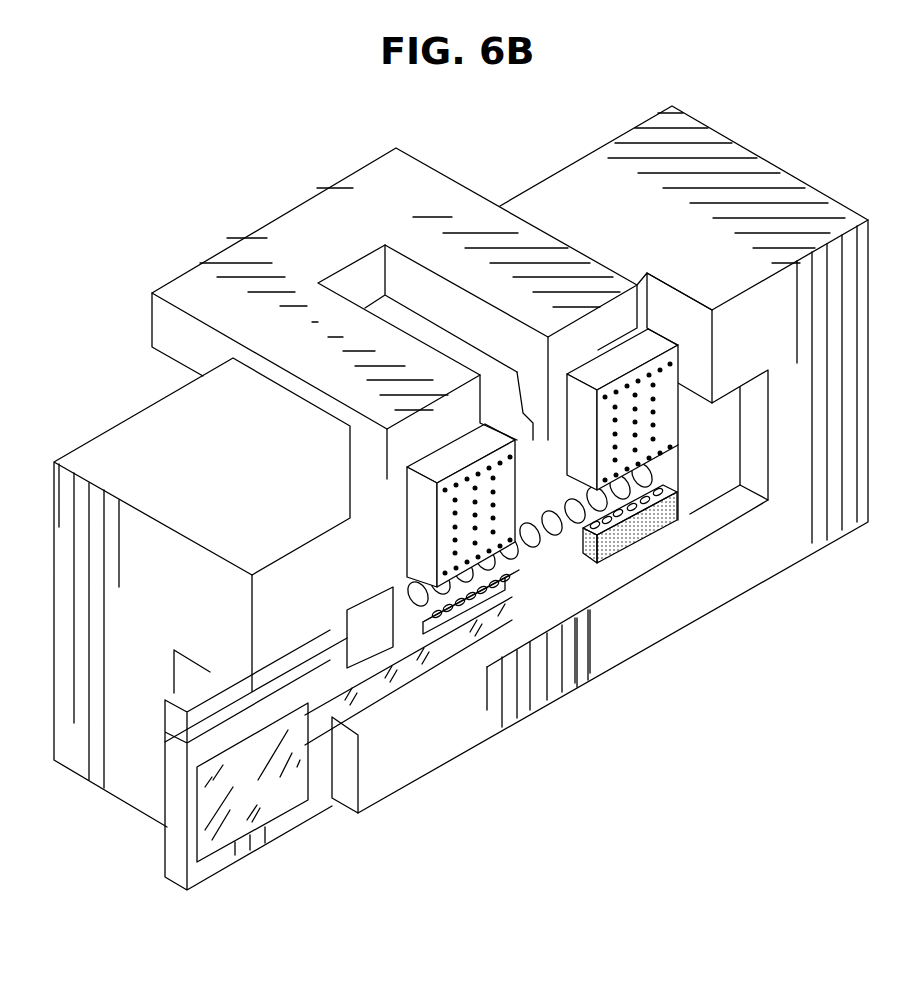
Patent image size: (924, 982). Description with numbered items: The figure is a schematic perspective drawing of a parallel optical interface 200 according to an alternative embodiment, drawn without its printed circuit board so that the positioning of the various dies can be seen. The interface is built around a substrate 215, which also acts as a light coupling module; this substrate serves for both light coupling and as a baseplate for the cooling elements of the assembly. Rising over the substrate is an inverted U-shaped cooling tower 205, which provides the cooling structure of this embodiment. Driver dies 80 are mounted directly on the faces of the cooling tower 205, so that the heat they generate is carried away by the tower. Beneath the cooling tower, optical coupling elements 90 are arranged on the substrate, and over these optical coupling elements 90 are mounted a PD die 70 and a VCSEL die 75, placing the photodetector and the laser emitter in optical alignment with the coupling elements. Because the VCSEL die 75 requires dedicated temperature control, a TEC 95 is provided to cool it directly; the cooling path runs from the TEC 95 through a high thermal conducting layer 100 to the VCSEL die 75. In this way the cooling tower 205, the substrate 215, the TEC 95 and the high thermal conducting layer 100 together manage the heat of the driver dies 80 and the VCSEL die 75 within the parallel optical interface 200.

The parallel optical interface 200 is at (722, 103).
The inverted U-shaped cooling tower 205 is at (268, 243).
The substrate 215 is at (862, 393).
The driver dies 80 is at (450, 527).
The optical coupling elements 90 is at (556, 515).
The PD die 70 is at (633, 545).
The VCSEL die 75 is at (437, 632).
The TEC 95 is at (178, 850).
The high thermal conducting layer 100 is at (353, 690).